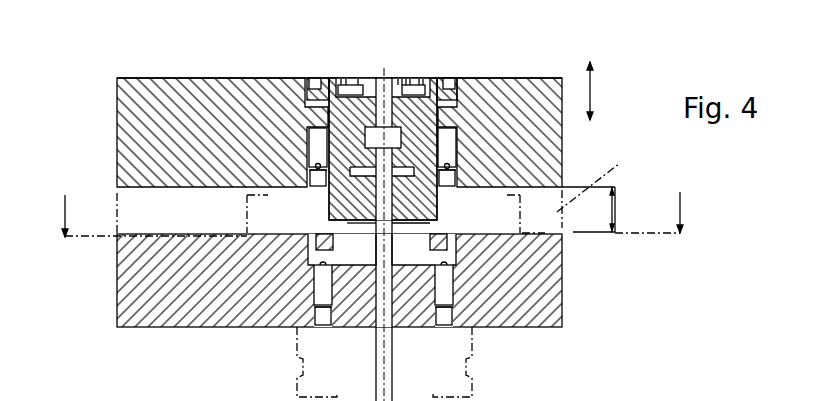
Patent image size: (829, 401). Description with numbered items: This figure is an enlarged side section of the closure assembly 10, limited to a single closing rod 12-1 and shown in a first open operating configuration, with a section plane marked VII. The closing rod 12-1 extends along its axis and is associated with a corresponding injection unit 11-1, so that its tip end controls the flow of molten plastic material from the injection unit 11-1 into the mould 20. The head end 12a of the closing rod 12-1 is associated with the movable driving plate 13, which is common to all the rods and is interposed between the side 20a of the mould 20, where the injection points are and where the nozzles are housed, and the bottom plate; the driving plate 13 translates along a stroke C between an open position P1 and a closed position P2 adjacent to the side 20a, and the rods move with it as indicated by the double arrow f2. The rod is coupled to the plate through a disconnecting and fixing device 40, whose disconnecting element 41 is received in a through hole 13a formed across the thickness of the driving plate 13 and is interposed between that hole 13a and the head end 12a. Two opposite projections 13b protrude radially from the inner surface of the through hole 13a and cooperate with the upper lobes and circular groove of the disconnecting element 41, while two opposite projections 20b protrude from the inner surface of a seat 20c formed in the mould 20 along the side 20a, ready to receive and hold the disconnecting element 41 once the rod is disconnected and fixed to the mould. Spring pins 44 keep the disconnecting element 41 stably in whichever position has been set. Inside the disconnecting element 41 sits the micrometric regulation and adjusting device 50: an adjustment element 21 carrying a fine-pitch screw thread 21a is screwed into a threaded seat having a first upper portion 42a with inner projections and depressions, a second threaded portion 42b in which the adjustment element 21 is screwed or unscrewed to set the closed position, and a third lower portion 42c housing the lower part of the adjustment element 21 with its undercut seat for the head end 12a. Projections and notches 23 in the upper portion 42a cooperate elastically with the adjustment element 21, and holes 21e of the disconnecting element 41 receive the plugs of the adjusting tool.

The closure assembly 10 is at (592, 142).
The injection unit 11-1 is at (308, 382).
The closing rod 12-1 is at (430, 223).
The head end 12a is at (447, 117).
The movable driving plate 13 is at (168, 136).
The through hole 13a is at (317, 117).
The projections 13b is at (300, 108).
The mould 20 is at (168, 295).
The side of the mould 20a is at (557, 223).
The projections 20b is at (335, 238).
The seat 20c is at (350, 242).
The adjustment element 21 is at (330, 112).
The screw thread 21a is at (423, 107).
The holes 21e is at (312, 82).
The projections and notches 23 is at (398, 78).
The disconnecting and fixing device 40 is at (452, 63).
The disconnecting element 41 is at (330, 195).
The first upper portion 42a is at (345, 80).
The second threaded portion 42b is at (355, 85).
The third lower portion 42c is at (362, 82).
The spring pins 44 is at (312, 147).
The micrometric regulation and adjusting device 50 is at (394, 70).
The stroke C is at (620, 210).
The double arrow f2 is at (592, 90).
The open position P1 is at (117, 158).
The closed position P2 is at (130, 207).
The section line VII is at (372, 214).